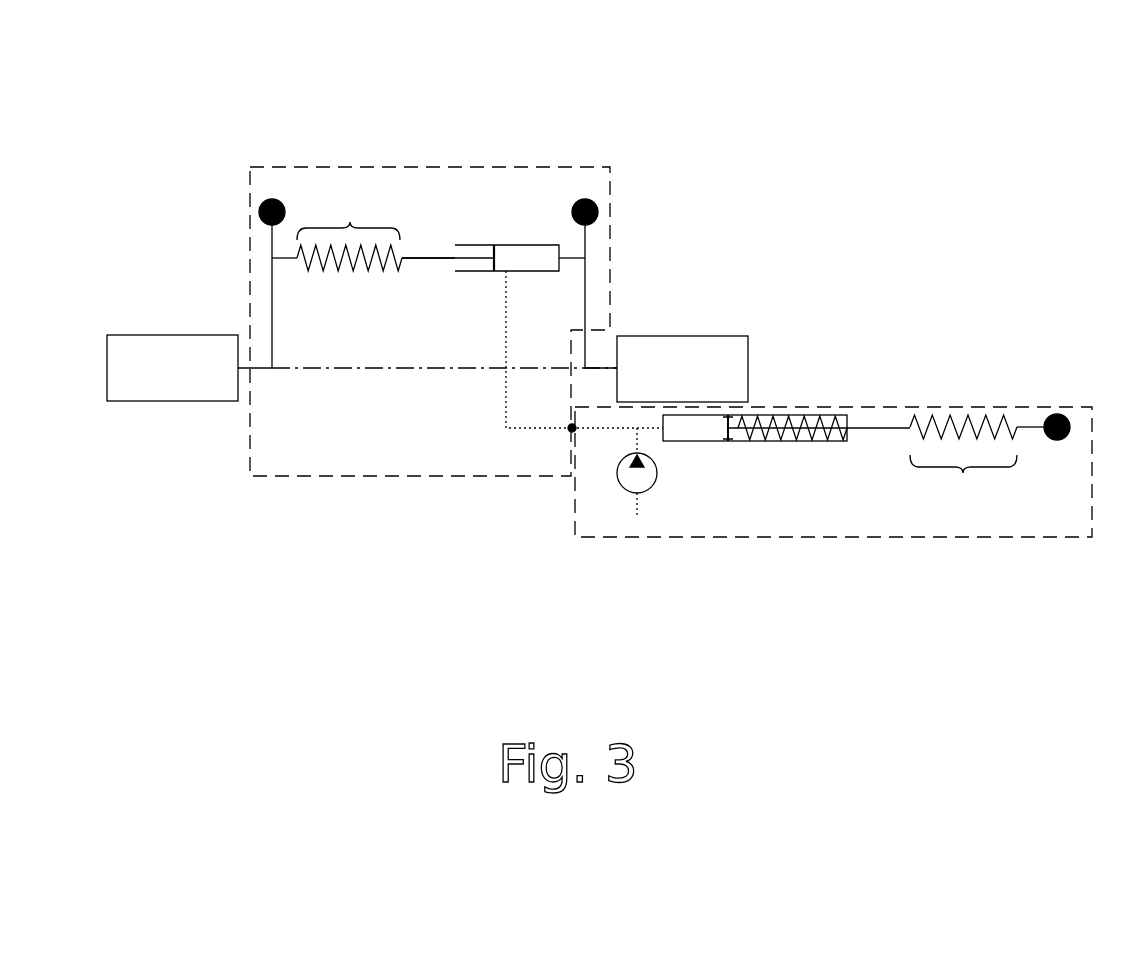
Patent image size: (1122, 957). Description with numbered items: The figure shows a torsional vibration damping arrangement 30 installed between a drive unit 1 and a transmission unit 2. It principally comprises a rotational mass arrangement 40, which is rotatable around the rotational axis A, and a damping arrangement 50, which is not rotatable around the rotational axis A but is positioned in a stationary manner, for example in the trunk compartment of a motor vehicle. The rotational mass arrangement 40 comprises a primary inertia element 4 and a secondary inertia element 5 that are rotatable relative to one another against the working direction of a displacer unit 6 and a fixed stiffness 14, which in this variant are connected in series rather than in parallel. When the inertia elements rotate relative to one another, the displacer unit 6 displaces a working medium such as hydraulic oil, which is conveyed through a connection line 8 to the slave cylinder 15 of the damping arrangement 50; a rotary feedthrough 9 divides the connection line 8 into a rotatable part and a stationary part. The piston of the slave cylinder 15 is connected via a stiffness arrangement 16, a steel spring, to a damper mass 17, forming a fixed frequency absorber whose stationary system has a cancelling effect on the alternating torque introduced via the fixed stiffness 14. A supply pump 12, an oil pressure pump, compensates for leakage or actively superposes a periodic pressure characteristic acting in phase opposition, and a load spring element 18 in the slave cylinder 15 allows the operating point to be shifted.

The drive unit 1 is at (160, 358).
The transmission unit 2 is at (708, 350).
The primary inertia element 4 is at (258, 210).
The secondary inertia element 5 is at (598, 212).
The displacer unit 6 is at (518, 232).
The connection line 8 is at (518, 430).
The rotary feedthrough 9 is at (570, 433).
The supply pump 12 is at (630, 480).
The fixed stiffness 14 is at (350, 222).
The slave cylinder 15 is at (695, 454).
The stiffness arrangement 16 is at (963, 473).
The damper mass 17 is at (1060, 414).
The load spring element 18 is at (803, 435).
The torsional vibration damping arrangement 30 is at (684, 100).
The rotational mass arrangement 40 is at (437, 167).
The damping arrangement 50 is at (877, 407).
The rotational axis A is at (363, 369).